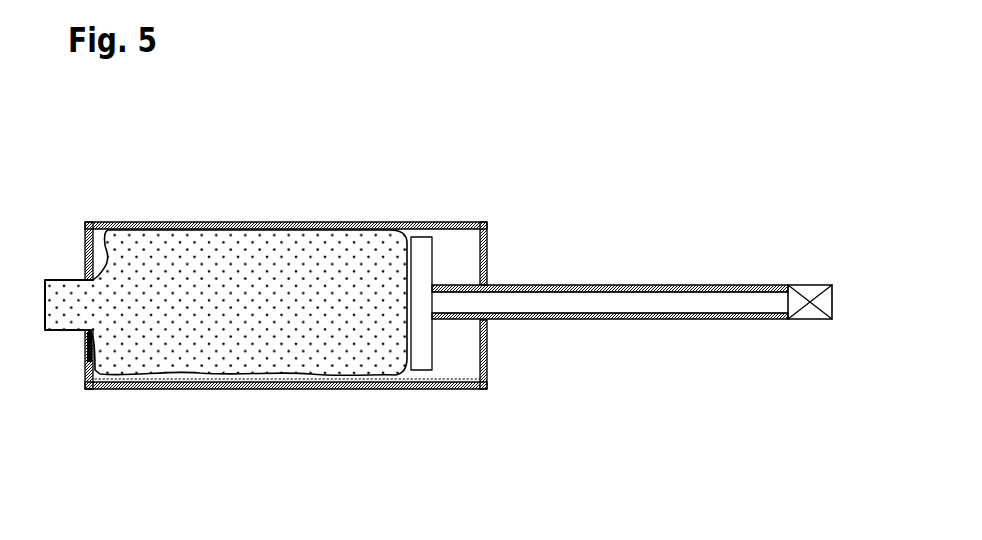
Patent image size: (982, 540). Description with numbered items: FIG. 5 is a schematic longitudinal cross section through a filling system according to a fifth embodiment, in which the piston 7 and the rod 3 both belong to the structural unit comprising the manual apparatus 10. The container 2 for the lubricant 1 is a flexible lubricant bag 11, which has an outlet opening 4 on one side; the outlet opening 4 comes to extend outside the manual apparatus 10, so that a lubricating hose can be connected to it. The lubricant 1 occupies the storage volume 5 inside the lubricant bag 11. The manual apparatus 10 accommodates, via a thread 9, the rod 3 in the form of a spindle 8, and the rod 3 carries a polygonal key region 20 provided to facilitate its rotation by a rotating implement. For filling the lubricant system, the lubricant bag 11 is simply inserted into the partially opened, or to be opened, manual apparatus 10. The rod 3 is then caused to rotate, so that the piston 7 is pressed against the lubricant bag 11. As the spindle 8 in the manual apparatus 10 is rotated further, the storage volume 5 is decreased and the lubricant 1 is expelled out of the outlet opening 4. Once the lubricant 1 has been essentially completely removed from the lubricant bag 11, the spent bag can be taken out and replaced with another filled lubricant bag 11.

The lubricant 1 is at (249, 310).
The container 2 is at (304, 378).
The rod 3 is at (640, 255).
The outlet opening 4 is at (55, 300).
The storage volume 5 is at (160, 343).
The piston 7 is at (422, 257).
The spindle 8 is at (648, 320).
The thread 9 is at (488, 285).
The manual apparatus 10 is at (262, 389).
The lubricant bag 11 is at (304, 240).
The polygonal key region 20 is at (142, 252).